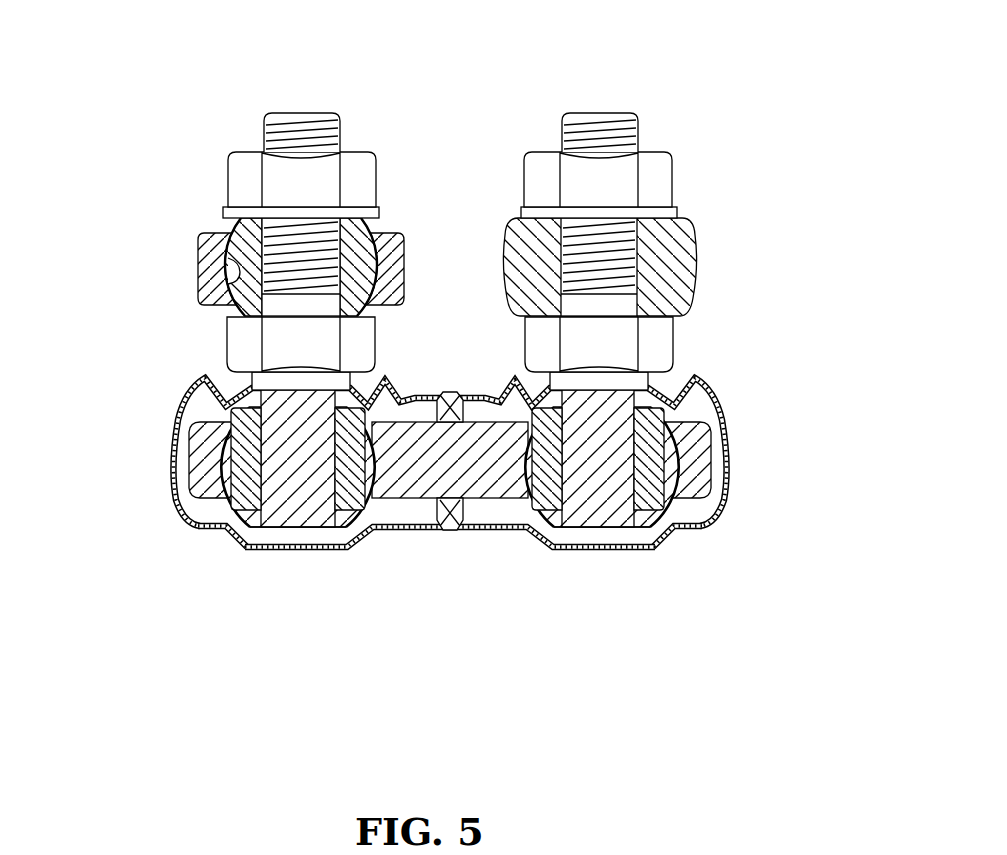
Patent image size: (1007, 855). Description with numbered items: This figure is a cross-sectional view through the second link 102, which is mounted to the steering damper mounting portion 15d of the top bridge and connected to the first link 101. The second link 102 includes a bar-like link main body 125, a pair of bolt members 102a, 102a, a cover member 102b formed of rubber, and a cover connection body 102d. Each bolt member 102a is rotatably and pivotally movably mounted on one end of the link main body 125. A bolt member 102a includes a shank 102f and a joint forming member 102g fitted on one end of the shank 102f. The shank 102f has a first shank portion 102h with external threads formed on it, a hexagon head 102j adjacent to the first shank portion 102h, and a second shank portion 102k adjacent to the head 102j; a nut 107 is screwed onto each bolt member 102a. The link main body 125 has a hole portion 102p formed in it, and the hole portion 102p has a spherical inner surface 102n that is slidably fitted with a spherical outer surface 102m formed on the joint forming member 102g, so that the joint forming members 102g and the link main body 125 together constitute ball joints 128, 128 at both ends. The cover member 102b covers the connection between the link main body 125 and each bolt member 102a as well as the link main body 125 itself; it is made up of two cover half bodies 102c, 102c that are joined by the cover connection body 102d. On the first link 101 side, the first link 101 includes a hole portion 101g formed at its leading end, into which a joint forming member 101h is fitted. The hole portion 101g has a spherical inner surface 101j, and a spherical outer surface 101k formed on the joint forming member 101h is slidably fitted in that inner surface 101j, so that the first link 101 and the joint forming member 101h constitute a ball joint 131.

The shank 102f is at (292, 110).
The first shank portion 102h is at (266, 132).
The nut 107 is at (242, 173).
The hole portion 101g is at (220, 226).
The first link 101 is at (197, 245).
The spherical inner surface 101j is at (236, 272).
The spherical outer surface 101k is at (262, 292).
The joint forming member 101h is at (372, 236).
The ball joint 131 is at (408, 245).
The steering damper mounting portion 15d is at (678, 242).
The bolt member 102a is at (222, 336).
The hexagon head 102j is at (238, 345).
The second link 102 is at (428, 538).
The cover member 102b is at (170, 523).
The cover half body 102c is at (273, 549).
The cover connection body 102d is at (480, 526).
The joint forming member 102g is at (230, 512).
The second shank portion 102k is at (312, 506).
The spherical outer surface 102m is at (192, 437).
The spherical inner surface 102n is at (216, 466).
The hole portion 102p is at (214, 508).
The link main body 125 is at (391, 522).
The ball joint 128 is at (240, 524).